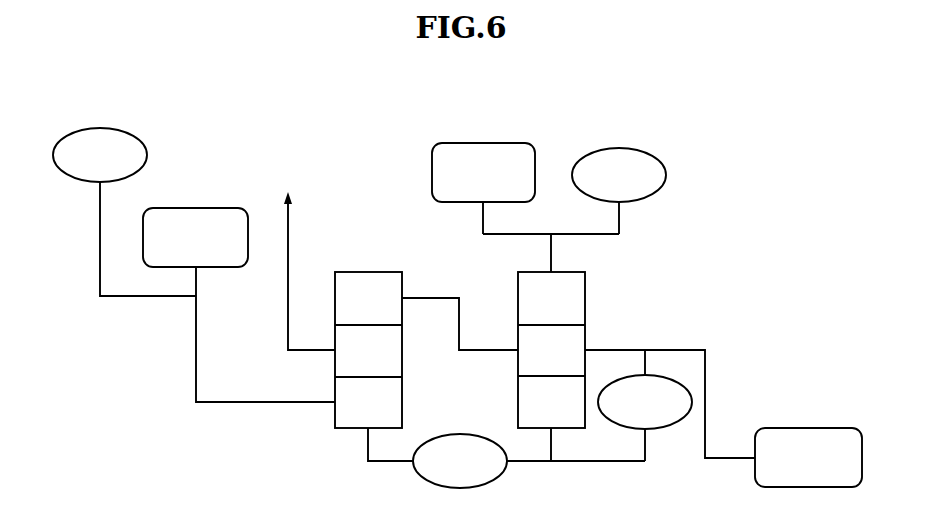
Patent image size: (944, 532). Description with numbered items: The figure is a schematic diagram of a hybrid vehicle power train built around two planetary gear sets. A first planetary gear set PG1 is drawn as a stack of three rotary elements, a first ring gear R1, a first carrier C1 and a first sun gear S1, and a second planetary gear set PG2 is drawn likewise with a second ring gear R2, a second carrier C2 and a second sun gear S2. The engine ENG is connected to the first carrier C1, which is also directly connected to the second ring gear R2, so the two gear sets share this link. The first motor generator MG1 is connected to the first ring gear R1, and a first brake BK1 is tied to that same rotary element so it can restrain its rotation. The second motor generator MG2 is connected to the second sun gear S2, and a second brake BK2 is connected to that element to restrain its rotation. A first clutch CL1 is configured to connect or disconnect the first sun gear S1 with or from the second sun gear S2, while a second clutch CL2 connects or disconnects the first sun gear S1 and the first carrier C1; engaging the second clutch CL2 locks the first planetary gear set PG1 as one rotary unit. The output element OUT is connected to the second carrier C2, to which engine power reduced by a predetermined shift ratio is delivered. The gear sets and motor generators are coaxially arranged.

The second brake BK2 is at (124, 212).
The second motor generator MG2 is at (239, 305).
The output element OUT is at (301, 258).
The second planetary gear set PG2 is at (368, 313).
The second ring gear R2 is at (368, 298).
The second carrier C2 is at (368, 350).
The second sun gear S2 is at (367, 402).
The first clutch CL1 is at (506, 458).
The second clutch CL2 is at (645, 405).
The first planetary gear set PG1 is at (600, 350).
The first ring gear R1 is at (551, 298).
The first carrier C1 is at (551, 350).
The first sun gear S1 is at (550, 402).
The first motor generator MG1 is at (483, 188).
The first brake BK1 is at (619, 191).
The engine ENG is at (808, 457).